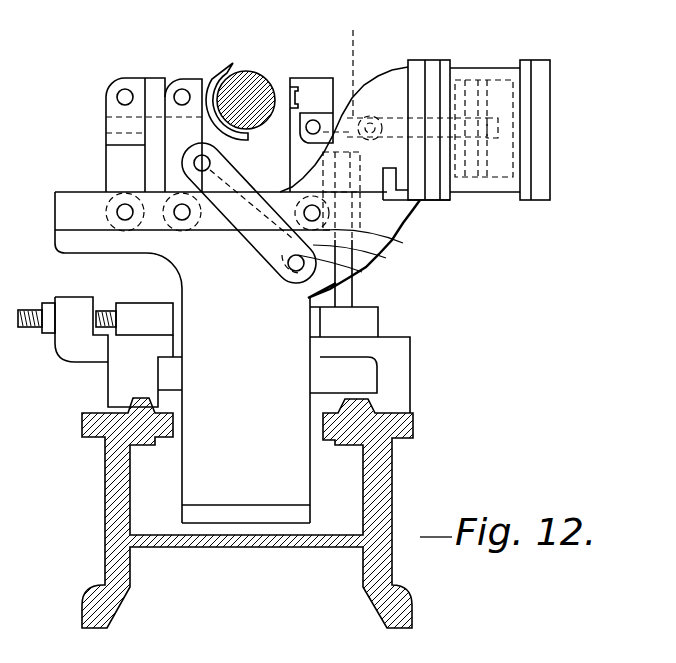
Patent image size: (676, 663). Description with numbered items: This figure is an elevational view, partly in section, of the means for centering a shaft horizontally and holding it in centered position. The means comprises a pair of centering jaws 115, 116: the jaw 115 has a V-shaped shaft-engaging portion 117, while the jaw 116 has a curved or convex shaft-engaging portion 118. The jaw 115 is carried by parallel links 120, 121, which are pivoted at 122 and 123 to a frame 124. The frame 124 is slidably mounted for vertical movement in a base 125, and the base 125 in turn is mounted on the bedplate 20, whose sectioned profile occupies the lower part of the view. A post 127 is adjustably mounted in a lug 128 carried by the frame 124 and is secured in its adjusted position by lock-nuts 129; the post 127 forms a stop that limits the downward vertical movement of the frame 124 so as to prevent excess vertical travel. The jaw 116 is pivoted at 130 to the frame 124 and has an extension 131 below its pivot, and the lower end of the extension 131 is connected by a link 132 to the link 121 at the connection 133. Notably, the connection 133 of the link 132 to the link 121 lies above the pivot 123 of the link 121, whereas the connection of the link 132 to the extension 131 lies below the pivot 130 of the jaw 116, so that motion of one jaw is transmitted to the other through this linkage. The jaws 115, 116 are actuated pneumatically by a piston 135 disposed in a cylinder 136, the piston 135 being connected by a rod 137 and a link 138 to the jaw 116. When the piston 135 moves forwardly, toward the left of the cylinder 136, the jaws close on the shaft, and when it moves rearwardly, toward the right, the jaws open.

The bedplate 20 is at (393, 425).
The centering jaw 115 is at (214, 80).
The centering jaw 116 is at (313, 78).
The V-shaped shaft-engaging portion 117 is at (243, 73).
The curved shaft-engaging portion 118 is at (290, 116).
The parallel link 120 is at (106, 127).
The parallel link 121 is at (173, 143).
The pivot 122 is at (123, 216).
The pivot 123 is at (182, 218).
The frame 124 is at (77, 198).
The base 125 is at (363, 323).
The post 127 is at (353, 296).
The lug 128 is at (400, 224).
The lock-nuts 129 is at (424, 241).
The pivot 130 is at (392, 257).
The extension 131 is at (380, 270).
The link 132 is at (249, 271).
The connection 133 is at (205, 163).
The piston 135 is at (462, 95).
The cylinder 136 is at (512, 68).
The rod 137 is at (398, 118).
The link 138 is at (327, 26).